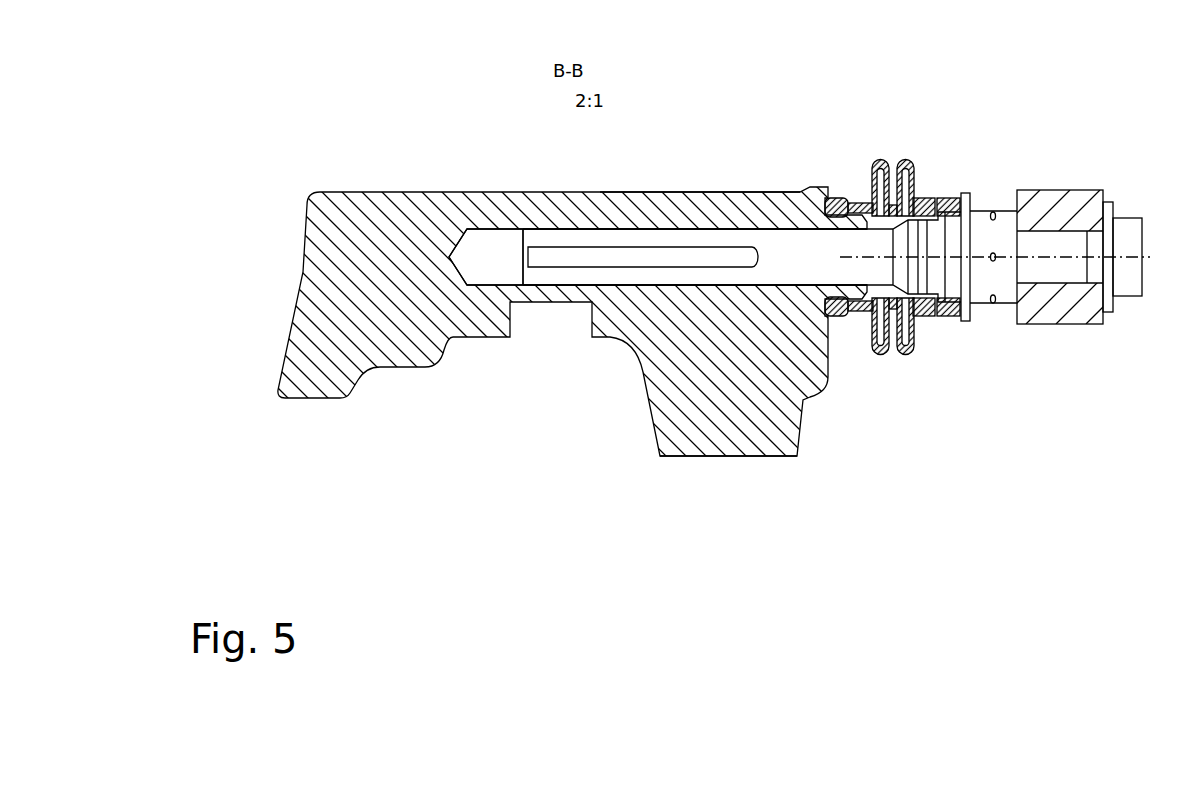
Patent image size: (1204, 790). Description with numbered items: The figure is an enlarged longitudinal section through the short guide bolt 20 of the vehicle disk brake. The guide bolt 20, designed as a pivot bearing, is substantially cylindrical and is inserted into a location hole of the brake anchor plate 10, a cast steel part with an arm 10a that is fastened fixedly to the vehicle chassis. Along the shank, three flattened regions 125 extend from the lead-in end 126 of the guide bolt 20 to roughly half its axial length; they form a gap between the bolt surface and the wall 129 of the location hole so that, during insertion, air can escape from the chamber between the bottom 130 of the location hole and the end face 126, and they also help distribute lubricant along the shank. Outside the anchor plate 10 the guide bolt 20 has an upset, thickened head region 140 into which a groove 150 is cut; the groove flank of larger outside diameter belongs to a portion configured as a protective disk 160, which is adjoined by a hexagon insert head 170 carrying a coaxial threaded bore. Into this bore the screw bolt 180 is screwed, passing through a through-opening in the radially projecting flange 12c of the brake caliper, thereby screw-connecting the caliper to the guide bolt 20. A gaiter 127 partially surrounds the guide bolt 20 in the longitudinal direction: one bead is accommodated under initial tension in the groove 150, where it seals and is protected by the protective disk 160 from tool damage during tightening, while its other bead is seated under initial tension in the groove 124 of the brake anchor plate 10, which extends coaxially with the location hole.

The brake anchor plate 10 is at (268, 346).
The arm 10a is at (712, 370).
The flange 12c is at (1067, 325).
The guide bolt 20 is at (790, 250).
The groove 124 is at (842, 197).
The flattened regions 125 is at (563, 248).
The lead-in end 126 is at (520, 235).
The gaiter 127 is at (902, 355).
The wall of the location hole 129 is at (686, 228).
The bottom of the location hole 130 is at (463, 245).
The head region 140 is at (935, 207).
The groove 150 is at (951, 315).
The protective disk 160 is at (963, 193).
The hexagon insert head 170 is at (1003, 207).
The screw bolt 180 is at (1077, 250).